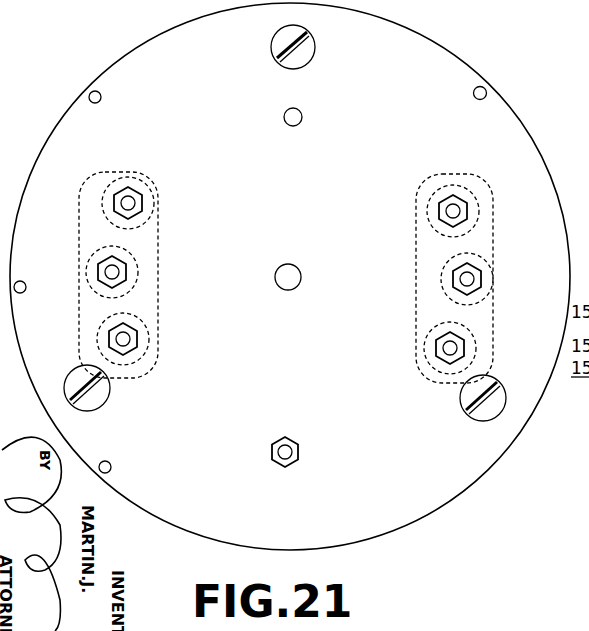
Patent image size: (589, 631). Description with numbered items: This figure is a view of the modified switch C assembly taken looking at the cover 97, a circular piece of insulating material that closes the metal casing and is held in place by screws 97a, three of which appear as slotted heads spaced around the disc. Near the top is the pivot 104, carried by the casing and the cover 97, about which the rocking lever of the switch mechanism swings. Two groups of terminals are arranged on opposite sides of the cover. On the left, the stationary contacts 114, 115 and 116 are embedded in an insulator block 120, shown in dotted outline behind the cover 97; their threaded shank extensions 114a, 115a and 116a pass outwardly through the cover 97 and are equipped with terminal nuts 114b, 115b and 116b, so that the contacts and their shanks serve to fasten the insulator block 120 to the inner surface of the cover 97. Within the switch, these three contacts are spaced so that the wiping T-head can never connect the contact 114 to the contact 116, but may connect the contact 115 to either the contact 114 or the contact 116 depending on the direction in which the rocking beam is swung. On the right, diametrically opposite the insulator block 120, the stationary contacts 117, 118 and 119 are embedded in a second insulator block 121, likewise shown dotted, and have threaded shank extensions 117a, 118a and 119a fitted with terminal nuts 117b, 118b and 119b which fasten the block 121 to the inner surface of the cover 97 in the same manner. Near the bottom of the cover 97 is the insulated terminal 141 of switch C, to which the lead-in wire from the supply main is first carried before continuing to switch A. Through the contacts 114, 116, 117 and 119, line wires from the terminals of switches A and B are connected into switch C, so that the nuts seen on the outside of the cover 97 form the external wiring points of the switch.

The cover 97 is at (418, 62).
The screws 97a is at (303, 57).
The pivot 104 is at (302, 114).
The stationary contact 114 is at (124, 180).
The threaded shank extension 114a is at (121, 205).
The terminal nut 114b is at (130, 199).
The stationary contact 115 is at (127, 278).
The threaded shank extension 115a is at (108, 276).
The terminal nut 115b is at (128, 282).
The stationary contact 116 is at (128, 340).
The threaded shank extension 116a is at (118, 342).
The terminal nut 116b is at (136, 350).
The stationary contact 117 is at (451, 341).
The threaded shank extension 117a is at (443, 350).
The terminal nut 117b is at (468, 337).
The stationary contact 118 is at (453, 273).
The threaded shank extension 118a is at (418, 292).
The terminal nut 118b is at (470, 268).
The stationary contact 119 is at (451, 204).
The threaded shank extension 119a is at (447, 211).
The terminal nut 119b is at (465, 205).
The insulator block 120 is at (158, 236).
The second insulator block 121 is at (416, 243).
The insulated terminal 141 is at (290, 458).